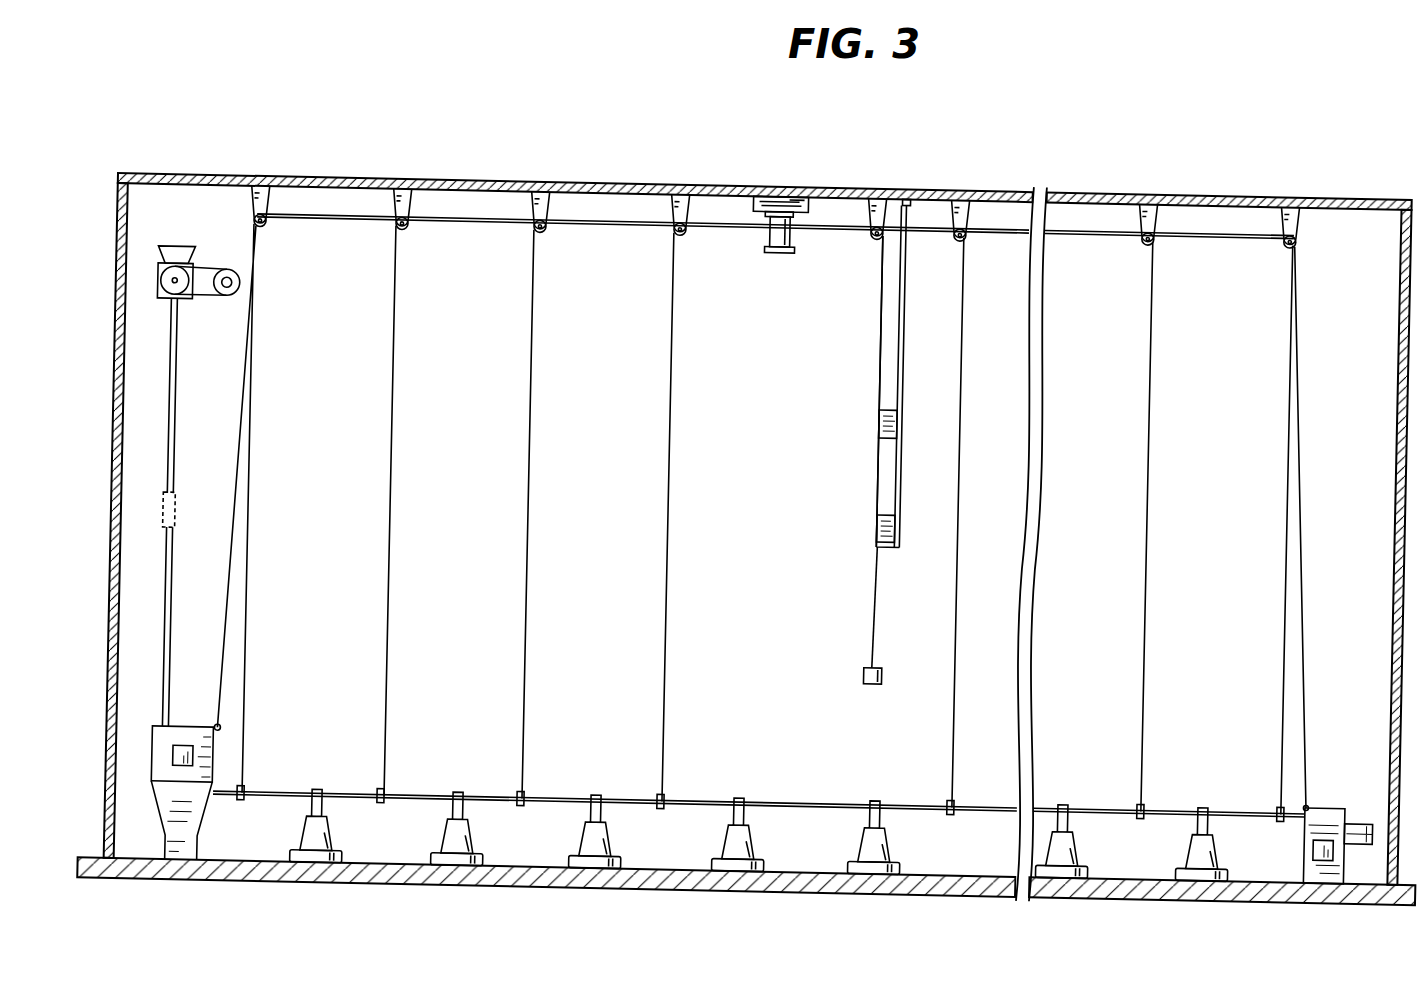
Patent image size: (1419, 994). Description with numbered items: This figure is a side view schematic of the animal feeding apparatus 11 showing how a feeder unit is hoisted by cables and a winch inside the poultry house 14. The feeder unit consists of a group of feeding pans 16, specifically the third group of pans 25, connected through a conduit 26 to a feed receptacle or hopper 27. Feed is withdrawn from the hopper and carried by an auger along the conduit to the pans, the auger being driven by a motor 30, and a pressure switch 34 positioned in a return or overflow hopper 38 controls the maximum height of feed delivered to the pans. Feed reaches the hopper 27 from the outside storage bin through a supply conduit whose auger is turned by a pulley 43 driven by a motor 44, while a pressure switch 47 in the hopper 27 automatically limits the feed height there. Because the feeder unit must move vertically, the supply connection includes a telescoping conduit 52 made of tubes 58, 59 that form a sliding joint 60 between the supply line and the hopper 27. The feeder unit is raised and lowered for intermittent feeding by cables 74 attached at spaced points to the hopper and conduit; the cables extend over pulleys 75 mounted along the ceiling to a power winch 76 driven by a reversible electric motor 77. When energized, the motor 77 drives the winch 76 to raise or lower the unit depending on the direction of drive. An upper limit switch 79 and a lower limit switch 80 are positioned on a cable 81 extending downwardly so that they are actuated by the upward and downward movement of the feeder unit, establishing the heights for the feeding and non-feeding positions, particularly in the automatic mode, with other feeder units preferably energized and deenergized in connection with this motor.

The animal feeding apparatus 11 is at (150, 423).
The poultry house 14 is at (1356, 173).
The feeding pans 16 is at (885, 840).
The third group of pans 25 is at (820, 785).
The conduit 26 is at (1003, 787).
The hopper 27 is at (186, 814).
The motor 30 is at (1392, 780).
The pressure switch 34 is at (1327, 827).
The return or overflow hopper 38 is at (1352, 783).
The pulley 43 is at (171, 290).
The motor 44 is at (232, 268).
The pressure switch 47 is at (188, 754).
The telescoping conduit 52 is at (195, 512).
The tube 58 is at (182, 431).
The tube 59 is at (181, 646).
The sliding joint 60 is at (184, 506).
The cables 74 is at (397, 565).
The pulleys 75 is at (546, 223).
The power winch 76 is at (792, 228).
The reversible electric motor 77 is at (775, 183).
The upper limit switch 79 is at (902, 409).
The lower limit switch 80 is at (902, 506).
The cable 81 is at (909, 358).